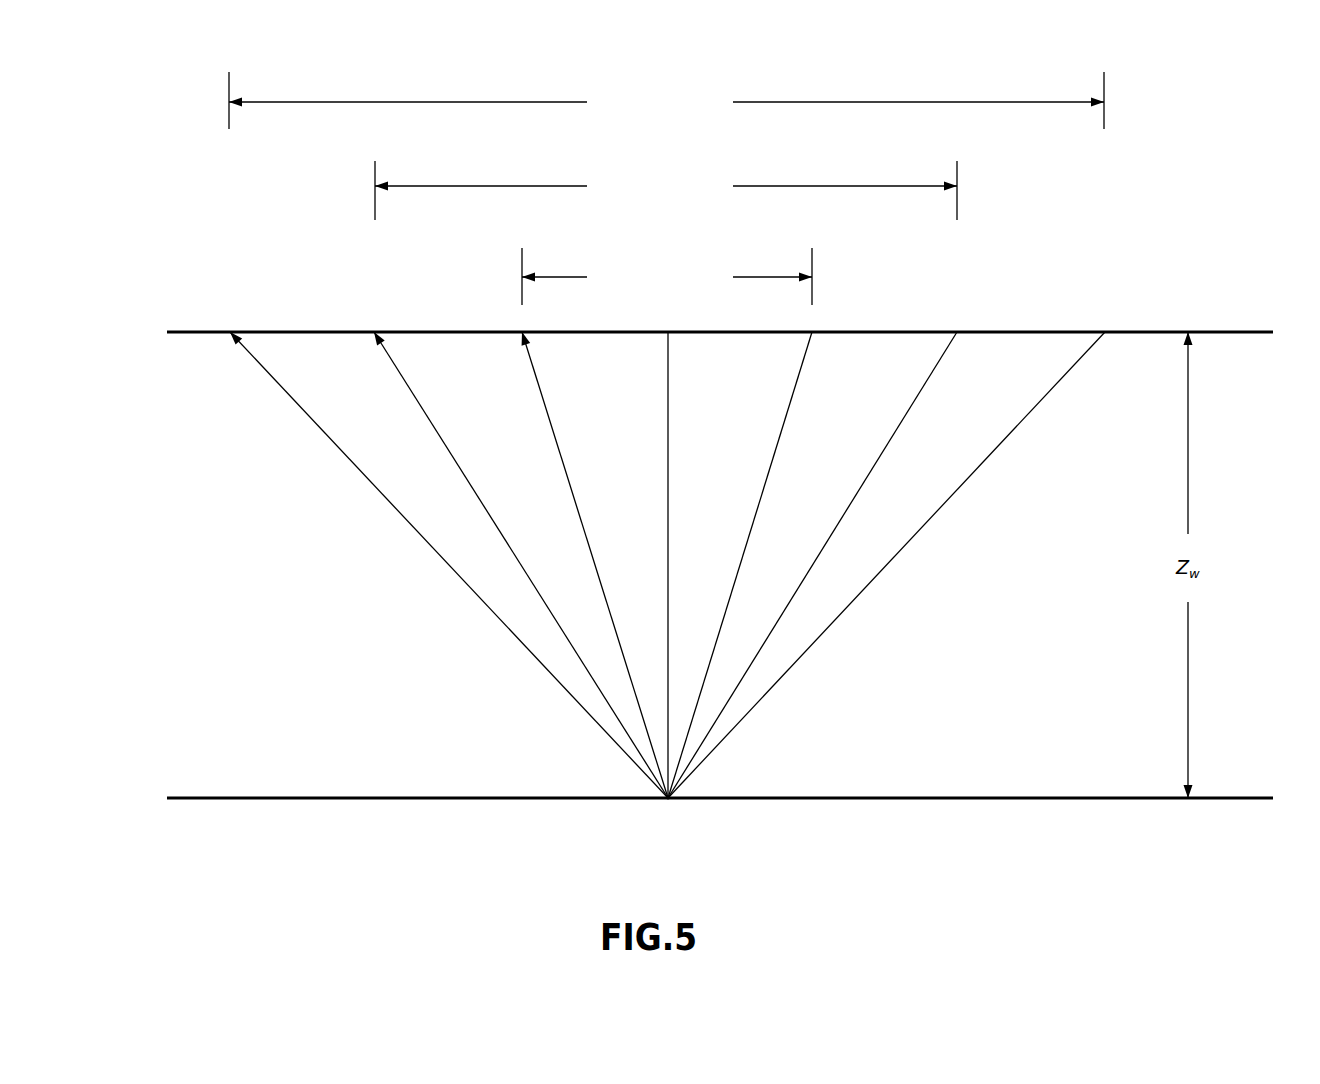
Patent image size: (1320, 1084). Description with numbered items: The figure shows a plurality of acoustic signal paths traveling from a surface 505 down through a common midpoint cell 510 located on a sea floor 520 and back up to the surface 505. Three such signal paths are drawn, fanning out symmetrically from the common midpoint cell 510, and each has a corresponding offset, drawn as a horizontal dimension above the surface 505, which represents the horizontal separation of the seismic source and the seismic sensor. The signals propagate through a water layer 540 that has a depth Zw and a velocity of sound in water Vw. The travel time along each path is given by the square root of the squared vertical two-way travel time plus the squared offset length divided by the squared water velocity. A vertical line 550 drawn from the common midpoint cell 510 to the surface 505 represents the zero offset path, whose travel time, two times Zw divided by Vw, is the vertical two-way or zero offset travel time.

The surface 505 is at (310, 331).
The sea floor 520 is at (385, 797).
The common midpoint cell 510 is at (667, 803).
The line 550 is at (669, 477).
The water layer 540 is at (185, 507).